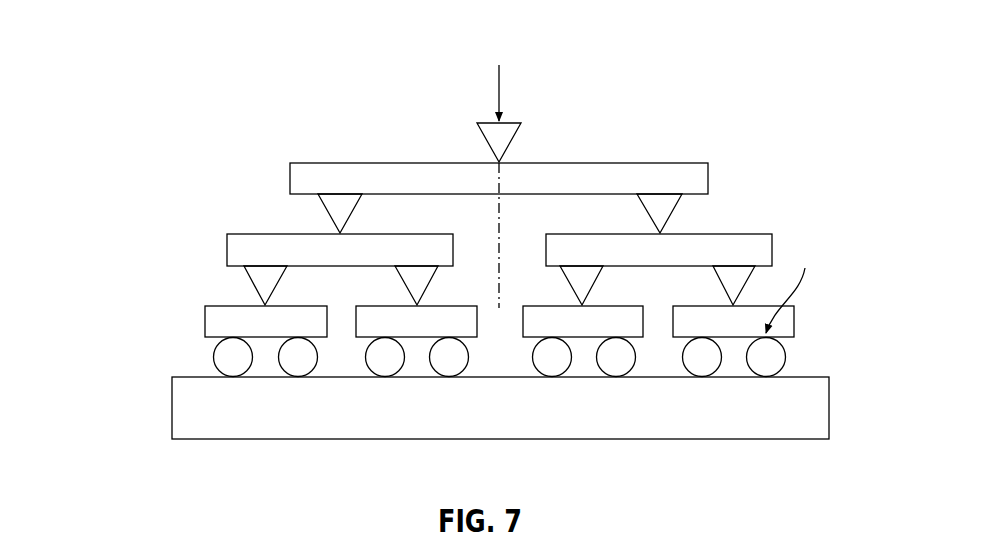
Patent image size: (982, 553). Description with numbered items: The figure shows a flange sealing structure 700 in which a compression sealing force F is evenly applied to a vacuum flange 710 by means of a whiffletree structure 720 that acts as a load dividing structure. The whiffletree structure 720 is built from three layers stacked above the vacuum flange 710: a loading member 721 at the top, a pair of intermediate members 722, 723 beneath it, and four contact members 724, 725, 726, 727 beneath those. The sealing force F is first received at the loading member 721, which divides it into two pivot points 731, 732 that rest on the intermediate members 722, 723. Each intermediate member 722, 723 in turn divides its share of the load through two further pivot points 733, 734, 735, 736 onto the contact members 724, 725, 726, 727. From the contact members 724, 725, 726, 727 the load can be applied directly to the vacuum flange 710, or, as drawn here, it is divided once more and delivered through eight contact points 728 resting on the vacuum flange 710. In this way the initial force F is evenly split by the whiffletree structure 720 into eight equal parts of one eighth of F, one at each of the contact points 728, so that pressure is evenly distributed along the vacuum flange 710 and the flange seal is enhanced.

The flange sealing structure 700 is at (191, 33).
The vacuum flange 710 is at (757, 440).
The whiffletree structure 720 is at (117, 163).
The loading member 721 is at (683, 163).
The intermediate member 722 is at (270, 246).
The intermediate member 723 is at (583, 246).
The contact member 724 is at (210, 325).
The contact member 725 is at (428, 303).
The contact member 726 is at (637, 332).
The contact member 727 is at (787, 330).
The contact points 728 is at (217, 365).
The pivot point 731 is at (355, 200).
The pivot point 732 is at (665, 198).
The pivot point 733 is at (262, 292).
The pivot point 734 is at (416, 296).
The pivot point 735 is at (582, 283).
The pivot point 736 is at (720, 282).